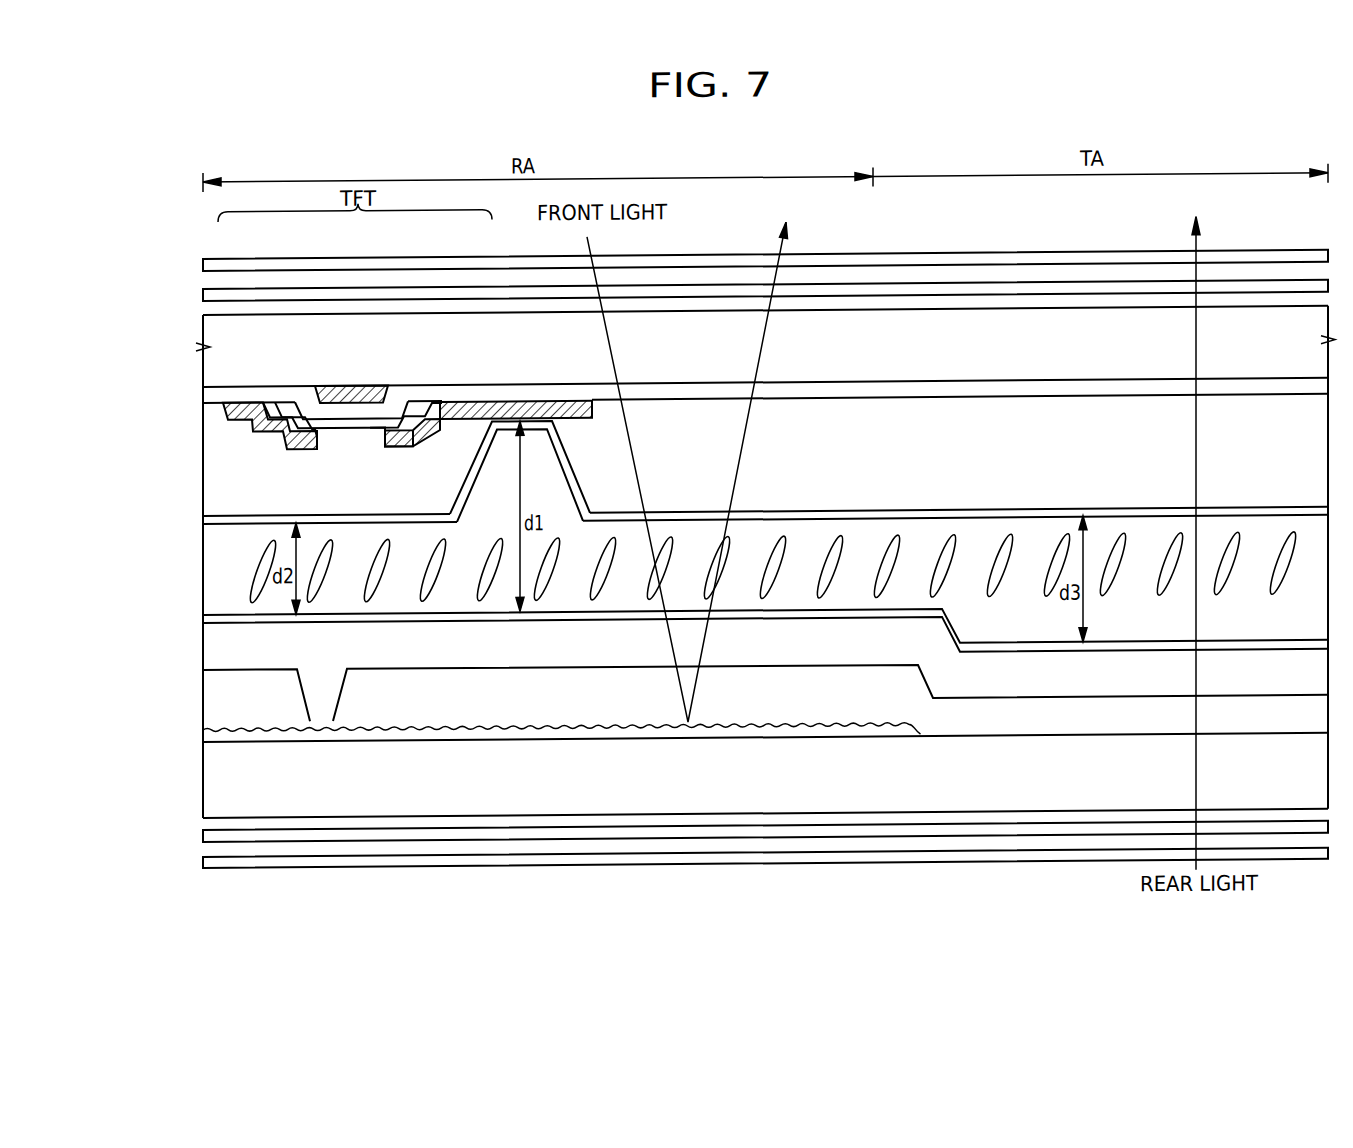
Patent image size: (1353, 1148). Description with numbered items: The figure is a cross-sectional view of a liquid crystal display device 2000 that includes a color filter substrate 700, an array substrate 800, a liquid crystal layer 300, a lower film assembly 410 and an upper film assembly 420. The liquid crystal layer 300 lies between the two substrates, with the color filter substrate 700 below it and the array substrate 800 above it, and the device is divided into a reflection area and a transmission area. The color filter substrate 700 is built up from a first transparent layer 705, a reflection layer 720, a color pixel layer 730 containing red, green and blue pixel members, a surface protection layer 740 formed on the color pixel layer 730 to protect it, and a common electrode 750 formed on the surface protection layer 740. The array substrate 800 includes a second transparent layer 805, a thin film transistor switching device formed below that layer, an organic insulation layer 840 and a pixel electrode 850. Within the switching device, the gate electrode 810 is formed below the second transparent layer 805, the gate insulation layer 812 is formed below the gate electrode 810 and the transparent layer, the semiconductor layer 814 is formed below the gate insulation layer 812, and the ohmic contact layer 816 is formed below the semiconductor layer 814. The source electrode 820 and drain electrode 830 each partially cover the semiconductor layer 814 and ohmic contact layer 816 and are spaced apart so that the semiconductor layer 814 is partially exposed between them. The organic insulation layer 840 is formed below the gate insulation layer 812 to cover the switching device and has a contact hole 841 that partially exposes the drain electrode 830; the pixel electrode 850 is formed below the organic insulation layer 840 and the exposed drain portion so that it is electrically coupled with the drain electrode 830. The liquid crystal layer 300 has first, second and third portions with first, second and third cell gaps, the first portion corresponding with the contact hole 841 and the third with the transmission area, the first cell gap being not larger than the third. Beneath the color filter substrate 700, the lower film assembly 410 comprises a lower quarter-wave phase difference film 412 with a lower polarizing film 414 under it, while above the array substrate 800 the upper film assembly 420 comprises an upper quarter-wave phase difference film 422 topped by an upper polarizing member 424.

The liquid crystal display device 2000 is at (653, 140).
The upper film assembly 420 is at (137, 253).
The upper polarizing member 424 is at (205, 264).
The upper λ/4 phase difference film 422 is at (205, 293).
The array substrate 800 is at (135, 522).
The second transparent layer 805 is at (213, 367).
The organic insulation layer 840 is at (213, 450).
The pixel electrode 850 is at (205, 516).
The contact hole 841 is at (500, 466).
The gate electrode 810 is at (351, 388).
The gate insulation layer 812 is at (417, 394).
The semiconductor layer 814 is at (291, 400).
The ohmic contact layer 816 is at (270, 417).
The source electrode 820 is at (234, 402).
The drain electrode 830 is at (467, 403).
The liquid crystal layer 300 is at (213, 570).
The color filter substrate 700 is at (135, 775).
The common electrode 750 is at (205, 617).
The surface protection layer 740 is at (213, 646).
The color pixel layer 730 is at (213, 671).
The reflection layer 720 is at (205, 736).
The first transparent layer 705 is at (213, 770).
The lower film assembly 410 is at (137, 828).
The lower λ/4 phase difference film 412 is at (205, 836).
The lower polarizing film 414 is at (205, 863).